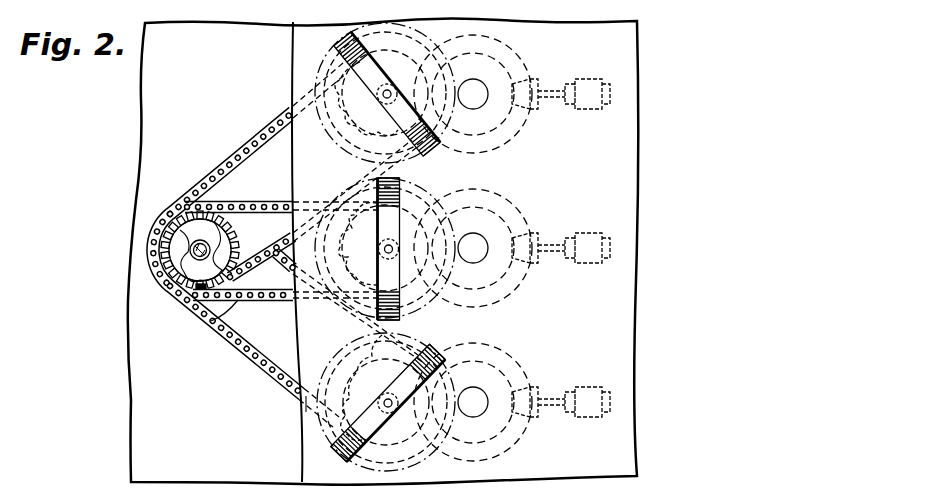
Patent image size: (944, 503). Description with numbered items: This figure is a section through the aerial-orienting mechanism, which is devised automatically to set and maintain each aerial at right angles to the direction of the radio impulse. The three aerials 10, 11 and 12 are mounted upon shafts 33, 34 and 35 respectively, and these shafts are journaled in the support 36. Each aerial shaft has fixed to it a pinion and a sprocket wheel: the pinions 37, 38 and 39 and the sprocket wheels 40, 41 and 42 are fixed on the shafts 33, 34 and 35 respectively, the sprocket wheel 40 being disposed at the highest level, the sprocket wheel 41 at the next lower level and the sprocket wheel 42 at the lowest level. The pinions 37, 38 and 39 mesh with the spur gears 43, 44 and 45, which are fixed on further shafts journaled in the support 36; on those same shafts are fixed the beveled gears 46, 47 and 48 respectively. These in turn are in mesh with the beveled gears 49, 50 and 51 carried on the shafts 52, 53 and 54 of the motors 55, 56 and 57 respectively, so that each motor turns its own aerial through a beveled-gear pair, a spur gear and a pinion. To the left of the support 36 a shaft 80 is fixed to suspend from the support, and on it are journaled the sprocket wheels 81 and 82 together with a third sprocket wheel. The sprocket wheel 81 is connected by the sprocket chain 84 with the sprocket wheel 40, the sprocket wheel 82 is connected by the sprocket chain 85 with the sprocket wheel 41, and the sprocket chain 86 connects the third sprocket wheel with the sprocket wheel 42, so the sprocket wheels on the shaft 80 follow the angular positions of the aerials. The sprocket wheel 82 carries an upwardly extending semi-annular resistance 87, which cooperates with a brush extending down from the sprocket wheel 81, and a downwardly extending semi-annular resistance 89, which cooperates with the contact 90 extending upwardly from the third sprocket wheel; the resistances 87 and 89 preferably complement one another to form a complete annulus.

The aerial 10 is at (397, 386).
The aerial 11 is at (384, 280).
The aerial 12 is at (377, 73).
The shaft 33 is at (409, 410).
The shaft 34 is at (383, 248).
The shaft 35 is at (352, 140).
The support 36 is at (293, 47).
The pinion 37 is at (419, 462).
The pinion 38 is at (428, 311).
The pinion 39 is at (408, 159).
The sprocket wheel 40 is at (307, 407).
The sprocket wheel 41 is at (322, 254).
The sprocket wheel 42 is at (338, 130).
The spur gear 43 is at (482, 415).
The spur gear 44 is at (484, 238).
The spur gear 45 is at (505, 57).
The beveled gear 46 is at (516, 443).
The beveled gear 47 is at (505, 197).
The beveled gear 48 is at (522, 125).
The beveled gear 49 is at (541, 418).
The beveled gear 50 is at (535, 237).
The beveled gear 51 is at (529, 81).
The motor shaft 52 is at (541, 388).
The motor shaft 53 is at (553, 245).
The motor shaft 54 is at (552, 91).
The motor 55 is at (589, 387).
The motor 56 is at (588, 234).
The motor 57 is at (590, 81).
The shaft 80 is at (192, 250).
The sprocket wheel 81 is at (181, 226).
The sprocket wheel 82 is at (236, 217).
The sprocket chain 84 is at (237, 348).
The sprocket chain 85 is at (263, 300).
The sprocket chain 86 is at (252, 148).
The semi-annular resistance 87 is at (158, 264).
The semi-annular resistance 89 is at (238, 236).
The contact 90 is at (210, 322).